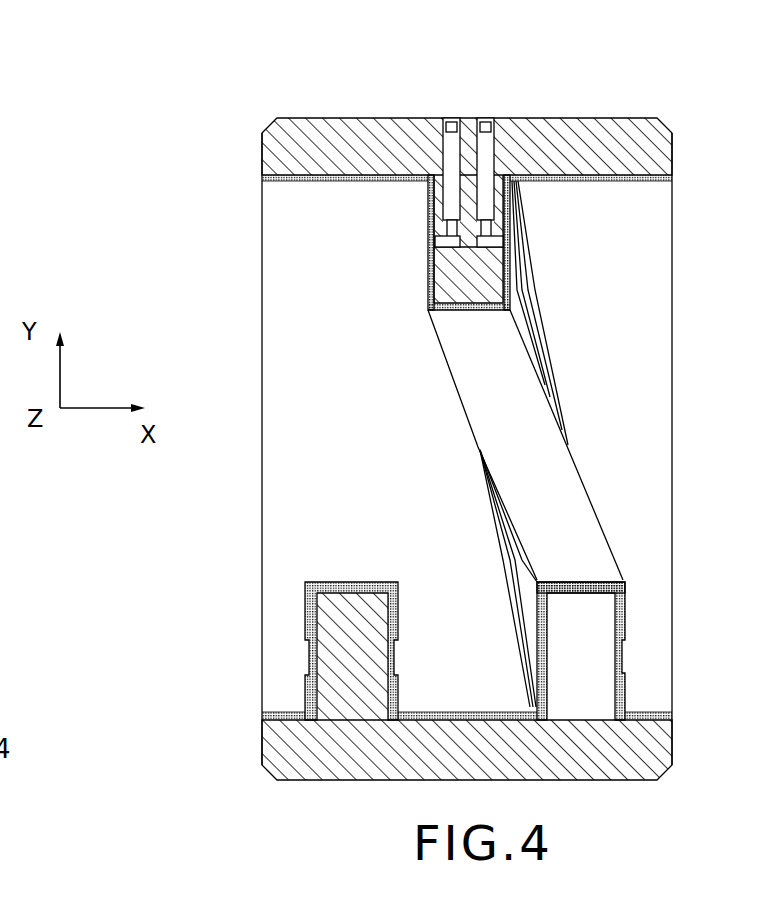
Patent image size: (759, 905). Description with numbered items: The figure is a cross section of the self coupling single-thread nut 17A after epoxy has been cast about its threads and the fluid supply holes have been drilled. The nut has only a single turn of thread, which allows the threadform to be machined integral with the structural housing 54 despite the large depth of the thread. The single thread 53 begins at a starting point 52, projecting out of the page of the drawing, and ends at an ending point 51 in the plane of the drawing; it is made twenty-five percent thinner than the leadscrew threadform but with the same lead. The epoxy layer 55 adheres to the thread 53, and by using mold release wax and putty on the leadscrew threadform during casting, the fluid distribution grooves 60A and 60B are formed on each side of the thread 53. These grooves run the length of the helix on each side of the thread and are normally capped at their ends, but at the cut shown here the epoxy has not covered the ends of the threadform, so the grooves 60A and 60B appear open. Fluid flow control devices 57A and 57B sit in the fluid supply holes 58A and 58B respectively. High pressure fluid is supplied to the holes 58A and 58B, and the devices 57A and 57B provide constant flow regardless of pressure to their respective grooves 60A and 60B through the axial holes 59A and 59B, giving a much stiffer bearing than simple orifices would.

The single-thread nut 17A is at (250, 709).
The thread ending point 51 is at (592, 662).
The thread starting point 52 is at (343, 661).
The single thread 53 is at (458, 442).
The structural housing 54 is at (668, 733).
The epoxy layer 55 is at (618, 585).
The fluid flow control device 57A is at (486, 173).
The fluid flow control device 57B is at (445, 176).
The fluid supply hole 58A is at (487, 119).
The fluid supply hole 58B is at (455, 119).
The axial hole 59A is at (508, 240).
The axial hole 59B is at (435, 240).
The fluid distribution groove 60A is at (515, 256).
The fluid distribution groove 60B is at (430, 256).